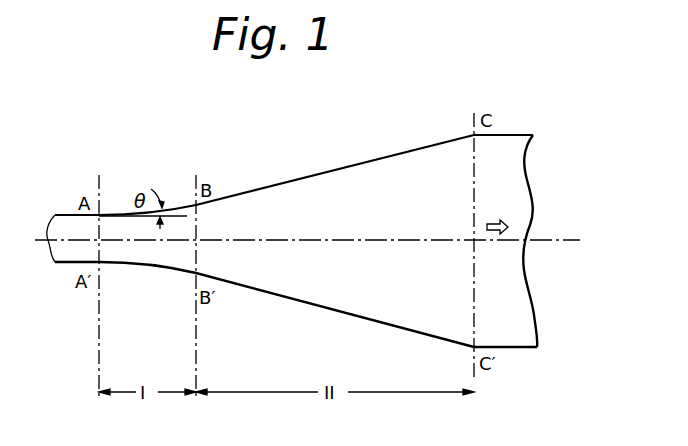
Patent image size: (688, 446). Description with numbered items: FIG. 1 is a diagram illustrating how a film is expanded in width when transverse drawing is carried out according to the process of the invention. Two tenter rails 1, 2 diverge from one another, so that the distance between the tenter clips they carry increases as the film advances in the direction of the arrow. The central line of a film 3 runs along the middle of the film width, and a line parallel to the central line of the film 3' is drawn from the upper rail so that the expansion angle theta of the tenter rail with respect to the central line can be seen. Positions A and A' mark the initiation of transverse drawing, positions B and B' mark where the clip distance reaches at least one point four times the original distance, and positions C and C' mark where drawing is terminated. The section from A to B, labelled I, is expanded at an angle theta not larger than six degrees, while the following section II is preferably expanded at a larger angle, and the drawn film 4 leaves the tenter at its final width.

The tenter rail 1 is at (283, 184).
The tenter rail 2 is at (280, 297).
The central line of a film 3 is at (528, 218).
The line parallel to the central line of the film 3' is at (143, 183).
The drawn film 4 is at (515, 163).